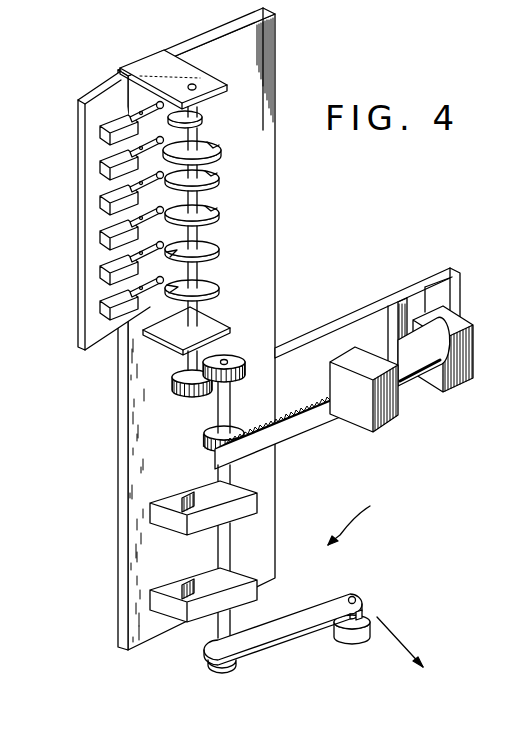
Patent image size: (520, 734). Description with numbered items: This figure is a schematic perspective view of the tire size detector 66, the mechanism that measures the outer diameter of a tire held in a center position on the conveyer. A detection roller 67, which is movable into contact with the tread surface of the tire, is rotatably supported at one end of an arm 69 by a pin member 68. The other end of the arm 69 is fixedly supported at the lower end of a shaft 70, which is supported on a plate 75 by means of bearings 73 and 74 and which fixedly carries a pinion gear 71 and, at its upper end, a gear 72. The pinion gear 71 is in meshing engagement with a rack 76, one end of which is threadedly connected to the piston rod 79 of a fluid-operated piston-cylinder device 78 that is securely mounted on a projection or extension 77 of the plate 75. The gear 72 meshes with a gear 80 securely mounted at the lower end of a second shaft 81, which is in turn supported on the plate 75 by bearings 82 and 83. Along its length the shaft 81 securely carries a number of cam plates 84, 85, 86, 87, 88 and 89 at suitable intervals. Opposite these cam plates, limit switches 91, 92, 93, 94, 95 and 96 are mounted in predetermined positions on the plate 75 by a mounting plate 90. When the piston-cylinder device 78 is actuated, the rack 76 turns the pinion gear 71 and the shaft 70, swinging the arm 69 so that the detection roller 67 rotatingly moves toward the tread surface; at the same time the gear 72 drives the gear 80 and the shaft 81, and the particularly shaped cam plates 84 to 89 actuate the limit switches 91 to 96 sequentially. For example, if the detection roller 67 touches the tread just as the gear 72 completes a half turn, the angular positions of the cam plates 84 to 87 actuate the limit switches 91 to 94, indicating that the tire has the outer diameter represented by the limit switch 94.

The tire size detector 66 is at (366, 515).
The detection roller 67 is at (340, 641).
The pin member 68 is at (362, 613).
The arm 69 is at (289, 630).
The shaft 70 is at (216, 547).
The pinion gear 71 is at (234, 428).
The gear 72 is at (235, 358).
The bearing 73 is at (247, 504).
The bearing 74 is at (247, 594).
The plate 75 is at (128, 459).
The rack 76 is at (302, 432).
The projection or extension 77 is at (381, 312).
The fluid-operated piston-cylinder device 78 is at (422, 376).
The piston rod 79 is at (348, 420).
The gear 80 is at (172, 377).
The shaft 81 is at (198, 322).
The bearing 82 is at (165, 74).
The bearing 83 is at (158, 333).
The cam plate 84 is at (219, 288).
The cam plate 85 is at (219, 249).
The cam plate 86 is at (219, 214).
The cam plate 87 is at (219, 180).
The cam plate 88 is at (221, 148).
The cam plate 89 is at (202, 116).
The mounting plate 90 is at (86, 110).
The limit switch 91 is at (100, 307).
The limit switch 92 is at (100, 272).
The limit switch 93 is at (100, 237).
The limit switch 94 is at (100, 202).
The limit switch 95 is at (100, 167).
The limit switch 96 is at (100, 132).